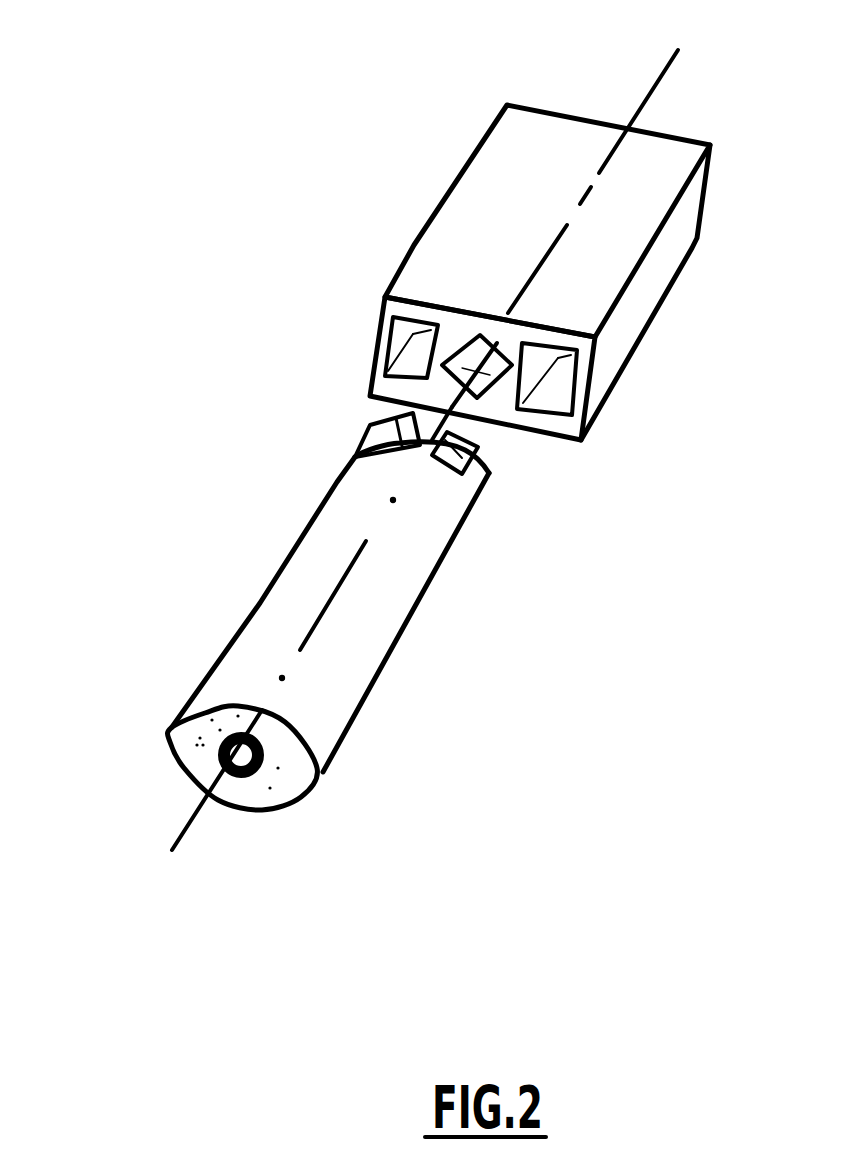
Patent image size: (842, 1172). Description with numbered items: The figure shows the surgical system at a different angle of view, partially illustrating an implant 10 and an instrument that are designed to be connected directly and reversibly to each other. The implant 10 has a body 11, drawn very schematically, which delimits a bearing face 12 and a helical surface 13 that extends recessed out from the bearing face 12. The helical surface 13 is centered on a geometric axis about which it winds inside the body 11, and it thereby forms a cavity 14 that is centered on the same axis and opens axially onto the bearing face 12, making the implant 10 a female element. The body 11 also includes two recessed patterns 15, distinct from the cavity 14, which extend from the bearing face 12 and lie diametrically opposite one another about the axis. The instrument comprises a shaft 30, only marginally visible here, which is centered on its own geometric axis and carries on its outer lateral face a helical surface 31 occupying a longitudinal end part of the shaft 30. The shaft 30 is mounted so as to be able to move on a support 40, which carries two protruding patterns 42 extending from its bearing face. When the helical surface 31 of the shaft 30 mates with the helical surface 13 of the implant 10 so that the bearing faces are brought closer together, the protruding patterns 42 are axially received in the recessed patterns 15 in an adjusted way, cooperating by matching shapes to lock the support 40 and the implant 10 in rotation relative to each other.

The implant 10 is at (462, 122).
The body 11 is at (683, 219).
The bearing face 12 is at (597, 387).
The helical surface 13 is at (497, 385).
The cavity 14 is at (466, 335).
The recessed patterns 15 is at (389, 336).
The shaft 30 is at (245, 760).
The helical surface 31 is at (405, 420).
The support 40 is at (200, 760).
The protruding patterns 42 is at (383, 432).